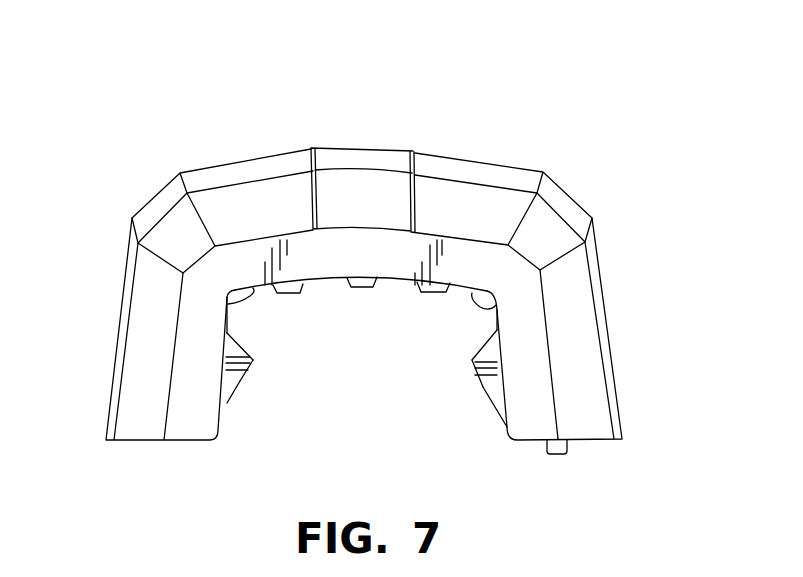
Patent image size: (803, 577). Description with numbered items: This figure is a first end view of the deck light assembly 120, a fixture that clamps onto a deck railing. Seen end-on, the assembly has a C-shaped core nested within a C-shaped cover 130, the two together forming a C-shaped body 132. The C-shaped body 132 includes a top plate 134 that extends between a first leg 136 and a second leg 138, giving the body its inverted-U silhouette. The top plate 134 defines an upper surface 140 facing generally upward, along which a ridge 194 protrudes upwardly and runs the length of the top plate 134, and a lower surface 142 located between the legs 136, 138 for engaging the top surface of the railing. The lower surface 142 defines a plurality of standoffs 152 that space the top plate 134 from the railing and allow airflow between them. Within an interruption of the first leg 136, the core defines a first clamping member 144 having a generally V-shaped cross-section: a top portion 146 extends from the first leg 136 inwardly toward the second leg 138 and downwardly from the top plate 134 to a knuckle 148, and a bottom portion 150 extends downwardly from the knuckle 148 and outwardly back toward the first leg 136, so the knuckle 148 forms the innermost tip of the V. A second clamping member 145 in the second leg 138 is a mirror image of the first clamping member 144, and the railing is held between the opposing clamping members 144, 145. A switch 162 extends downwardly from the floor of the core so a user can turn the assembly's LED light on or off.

The deck light assembly 120 is at (400, 93).
The C-shaped cover 130 is at (570, 193).
The C-shaped body 132 is at (150, 188).
The top plate 134 is at (247, 167).
The upper surface 140 is at (236, 177).
The first leg 136 is at (585, 360).
The second leg 138 is at (145, 337).
The lower surface 142 is at (480, 307).
The first clamping member 144 is at (477, 385).
The second clamping member 145 is at (243, 397).
The top portion 146 is at (490, 343).
The knuckle 148 is at (472, 360).
The bottom portion 150 is at (497, 397).
The standoffs 152 is at (420, 292).
The switch 162 is at (552, 455).
The ridge 194 is at (362, 155).